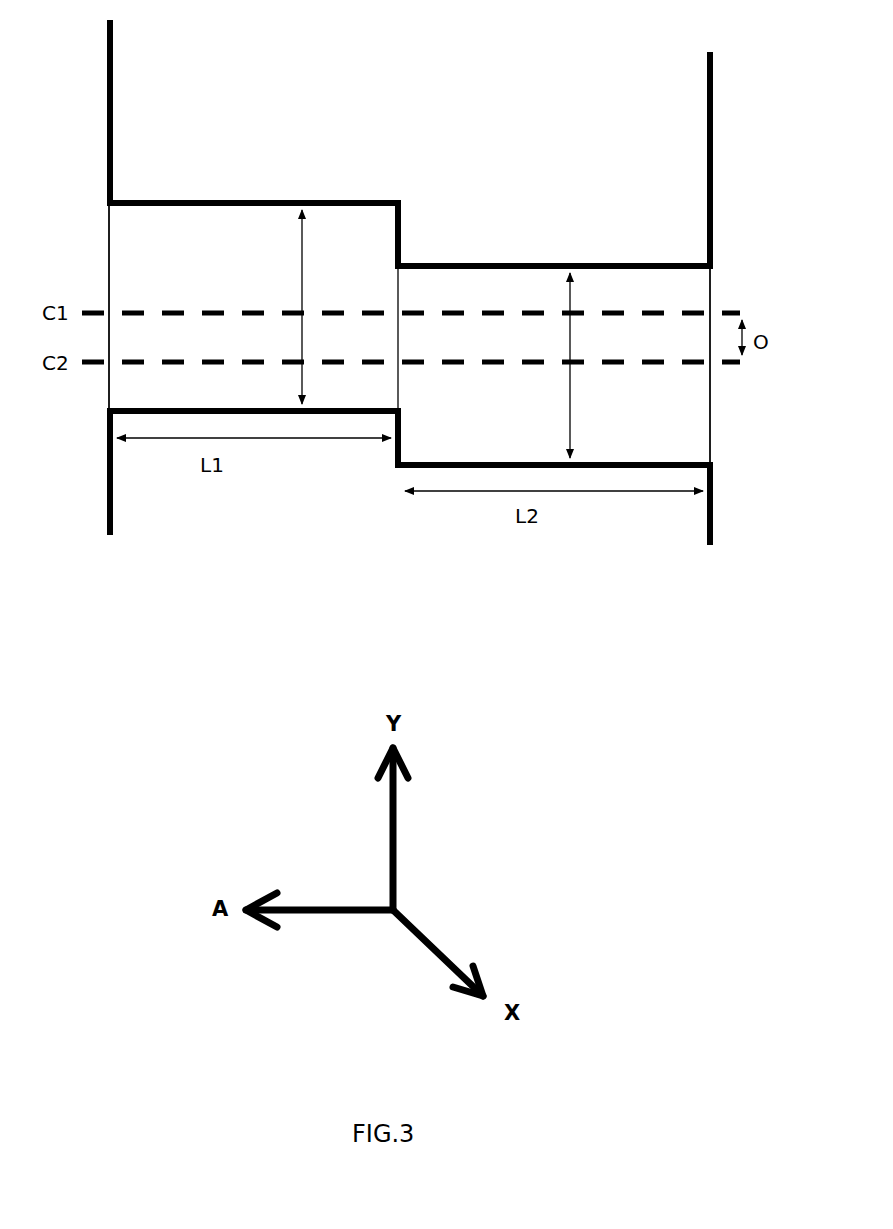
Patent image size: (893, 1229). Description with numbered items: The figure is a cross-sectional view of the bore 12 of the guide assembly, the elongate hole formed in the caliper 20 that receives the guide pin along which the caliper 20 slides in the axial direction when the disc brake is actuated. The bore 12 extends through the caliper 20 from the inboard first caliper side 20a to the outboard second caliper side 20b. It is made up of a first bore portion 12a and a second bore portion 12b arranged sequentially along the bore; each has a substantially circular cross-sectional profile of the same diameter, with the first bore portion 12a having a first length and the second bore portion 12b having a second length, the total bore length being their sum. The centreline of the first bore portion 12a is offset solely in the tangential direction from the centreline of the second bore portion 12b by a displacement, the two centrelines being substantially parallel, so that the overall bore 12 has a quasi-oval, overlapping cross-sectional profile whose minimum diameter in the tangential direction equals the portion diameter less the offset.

The bore 12 is at (171, 388).
The first bore portion 12a is at (239, 223).
The second bore portion 12b is at (647, 294).
The caliper 20 is at (404, 86).
The first caliper side 20a is at (116, 252).
The second caliper side 20b is at (711, 295).